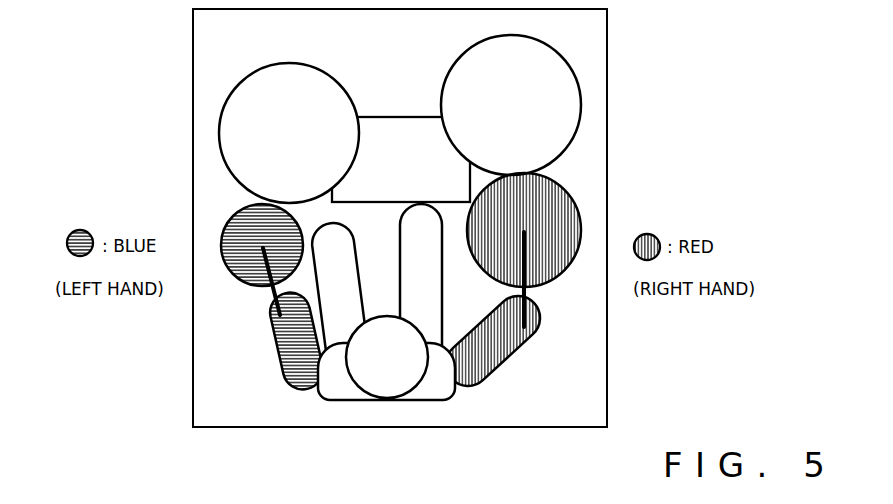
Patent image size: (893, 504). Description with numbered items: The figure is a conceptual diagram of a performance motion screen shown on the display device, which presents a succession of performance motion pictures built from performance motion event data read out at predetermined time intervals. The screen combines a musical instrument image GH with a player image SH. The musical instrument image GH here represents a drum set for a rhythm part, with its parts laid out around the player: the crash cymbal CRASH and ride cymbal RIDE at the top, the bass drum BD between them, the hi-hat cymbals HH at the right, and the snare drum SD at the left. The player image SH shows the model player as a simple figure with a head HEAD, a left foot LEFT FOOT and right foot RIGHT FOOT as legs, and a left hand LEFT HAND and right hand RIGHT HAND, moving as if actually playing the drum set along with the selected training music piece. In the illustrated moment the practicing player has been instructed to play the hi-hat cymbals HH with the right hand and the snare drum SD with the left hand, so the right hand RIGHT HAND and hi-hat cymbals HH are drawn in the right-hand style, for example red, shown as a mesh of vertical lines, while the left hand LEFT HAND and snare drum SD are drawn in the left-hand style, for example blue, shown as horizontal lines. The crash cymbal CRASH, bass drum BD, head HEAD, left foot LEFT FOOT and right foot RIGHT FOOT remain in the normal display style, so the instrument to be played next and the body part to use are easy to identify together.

The musical instrument image GH is at (582, 142).
The player image SH is at (552, 340).
The bass drum BD is at (401, 159).
The ride cymbal RIDE is at (289, 133).
The crash cymbal CRASH is at (511, 105).
The snare drum SD is at (262, 245).
The hi-hat cymbals HH is at (524, 230).
The head HEAD is at (387, 357).
The left foot LEFT FOOT is at (334, 254).
The right foot RIGHT FOOT is at (423, 260).
The left hand LEFT HAND is at (292, 378).
The right hand RIGHT HAND is at (483, 380).